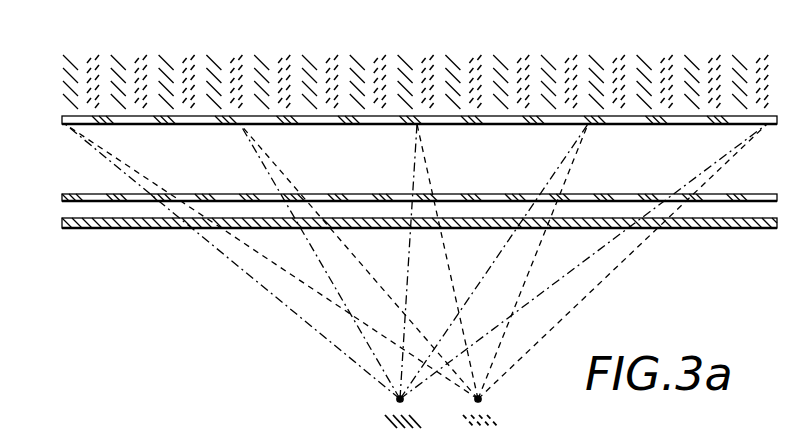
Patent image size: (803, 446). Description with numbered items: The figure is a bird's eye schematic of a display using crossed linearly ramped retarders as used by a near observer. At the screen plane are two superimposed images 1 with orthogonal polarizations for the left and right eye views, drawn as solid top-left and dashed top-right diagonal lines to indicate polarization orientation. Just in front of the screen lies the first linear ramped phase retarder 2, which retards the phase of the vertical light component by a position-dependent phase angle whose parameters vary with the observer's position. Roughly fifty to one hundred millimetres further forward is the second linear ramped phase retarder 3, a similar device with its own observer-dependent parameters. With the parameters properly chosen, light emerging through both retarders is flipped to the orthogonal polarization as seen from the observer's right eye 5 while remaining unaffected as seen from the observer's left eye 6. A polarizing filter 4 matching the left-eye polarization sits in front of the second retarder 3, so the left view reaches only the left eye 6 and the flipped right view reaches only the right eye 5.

The two superimposed images 1 is at (397, 82).
The first linear ramped phase retarder 2 is at (401, 122).
The second linear ramped phase retarder 3 is at (401, 197).
The polarizing filter 4 is at (401, 227).
The observer's right eye 5 is at (416, 276).
The observer's left eye 6 is at (416, 276).